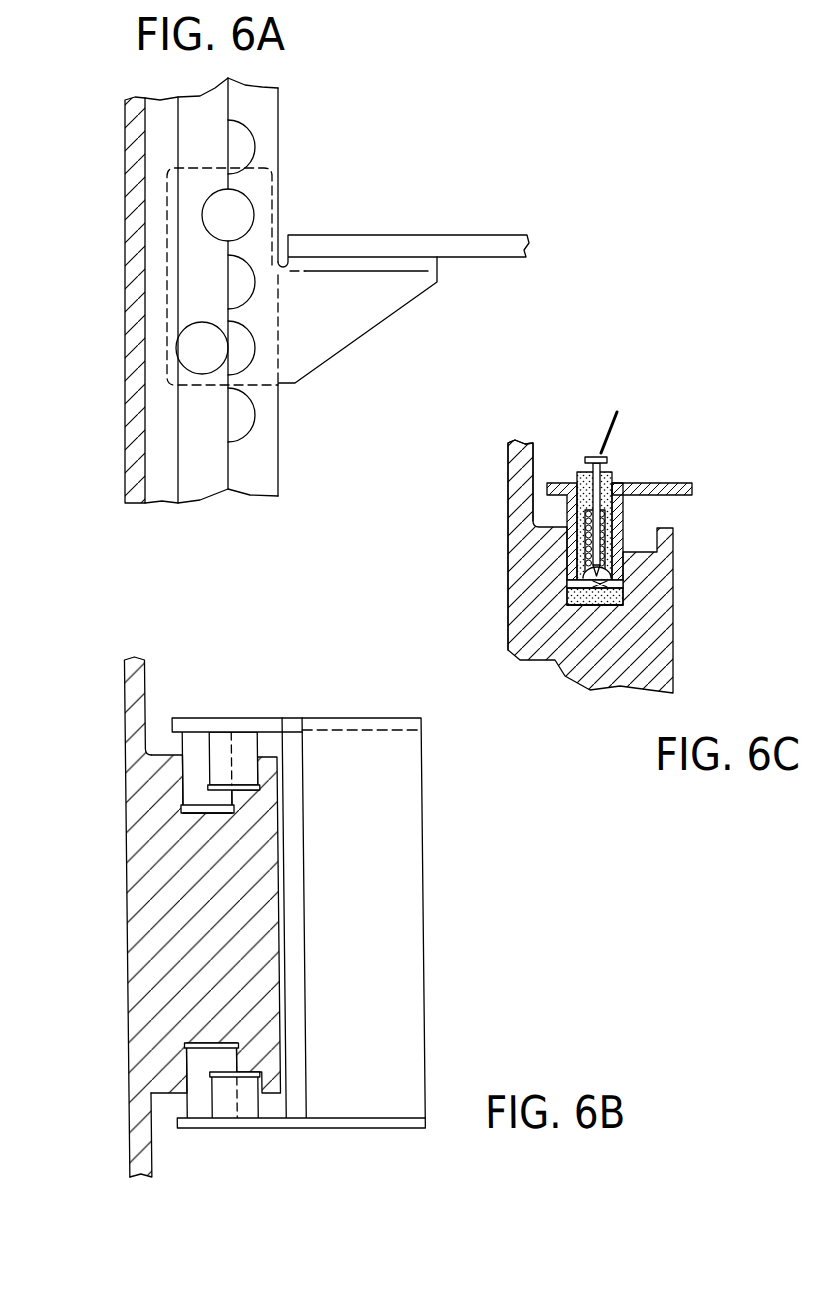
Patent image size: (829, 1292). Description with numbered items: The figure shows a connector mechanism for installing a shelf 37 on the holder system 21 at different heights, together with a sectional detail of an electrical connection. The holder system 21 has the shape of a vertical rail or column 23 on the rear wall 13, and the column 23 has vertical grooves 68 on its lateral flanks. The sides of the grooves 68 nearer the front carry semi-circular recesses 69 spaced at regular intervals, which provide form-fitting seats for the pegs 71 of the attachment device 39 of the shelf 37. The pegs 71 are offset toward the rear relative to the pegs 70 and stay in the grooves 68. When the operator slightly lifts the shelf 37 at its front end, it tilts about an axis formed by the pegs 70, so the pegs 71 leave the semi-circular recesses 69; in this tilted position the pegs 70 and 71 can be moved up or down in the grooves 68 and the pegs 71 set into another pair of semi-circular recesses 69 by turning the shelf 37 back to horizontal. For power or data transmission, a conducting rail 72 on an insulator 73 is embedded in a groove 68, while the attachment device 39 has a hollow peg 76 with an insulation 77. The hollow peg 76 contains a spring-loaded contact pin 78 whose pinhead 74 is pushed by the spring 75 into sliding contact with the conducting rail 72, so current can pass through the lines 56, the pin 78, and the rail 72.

In FIG. 6A, the rear wall 13 is at (133, 230).
In FIG. 6C, the rear wall 13 is at (515, 470).
In FIG. 6B, the rear wall 13 is at (143, 960).
In FIG. 6A, the holder system 21 is at (168, 515).
In FIG. 6B, the holder system 21 is at (165, 1181).
In FIG. 6C, the column 23 is at (578, 655).
In FIG. 6B, the column 23 is at (210, 882).
In FIG. 6A, the shelf 37 is at (512, 245).
In FIG. 6B, the shelf 37 is at (397, 935).
In FIG. 6A, the attachment device 39 is at (330, 323).
In FIG. 6B, the attachment device 39 is at (193, 725).
In FIG. 6C, the lines 56 is at (599, 455).
In FIG. 6A, the grooves 68 is at (198, 473).
In FIG. 6C, the grooves 68 is at (624, 598).
In FIG. 6B, the grooves 68 is at (193, 813).
In FIG. 6A, the semi-circular recesses 69 is at (257, 140).
In FIG. 6B, the semi-circular recesses 69 is at (247, 792).
In FIG. 6A, the pegs 70 is at (195, 348).
In FIG. 6B, the pegs 70 is at (193, 780).
In FIG. 6A, the pegs 71 is at (235, 215).
In FIG. 6B, the pegs 71 is at (238, 755).
In FIG. 6C, the conducting rail 72 is at (570, 603).
In FIG. 6C, the insulator 73 is at (622, 607).
In FIG. 6C, the pinhead 74 is at (612, 590).
In FIG. 6C, the spring 75 is at (613, 525).
In FIG. 6C, the hollow peg 76 is at (570, 507).
In FIG. 6C, the insulation 77 is at (616, 480).
In FIG. 6C, the contact pin 78 is at (610, 477).